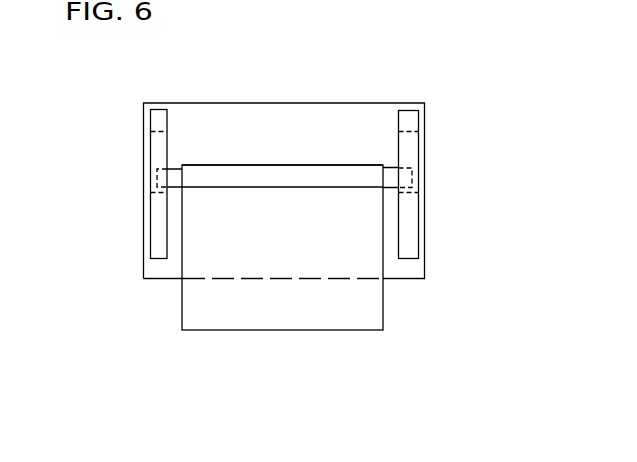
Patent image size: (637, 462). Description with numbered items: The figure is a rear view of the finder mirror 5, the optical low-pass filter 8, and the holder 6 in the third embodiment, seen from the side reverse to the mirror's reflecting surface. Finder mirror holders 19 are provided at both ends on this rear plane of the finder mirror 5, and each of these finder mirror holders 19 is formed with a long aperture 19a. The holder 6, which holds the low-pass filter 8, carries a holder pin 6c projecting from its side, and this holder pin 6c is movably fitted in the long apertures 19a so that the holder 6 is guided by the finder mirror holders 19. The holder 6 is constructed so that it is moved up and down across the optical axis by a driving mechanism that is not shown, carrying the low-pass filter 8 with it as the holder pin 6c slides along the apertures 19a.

The finder mirror 5 is at (345, 113).
The holder 6 is at (258, 170).
The holder pin 6c is at (181, 173).
The low-pass filter 8 is at (277, 318).
The finder mirror holder 19 is at (413, 118).
The long aperture 19a is at (413, 140).